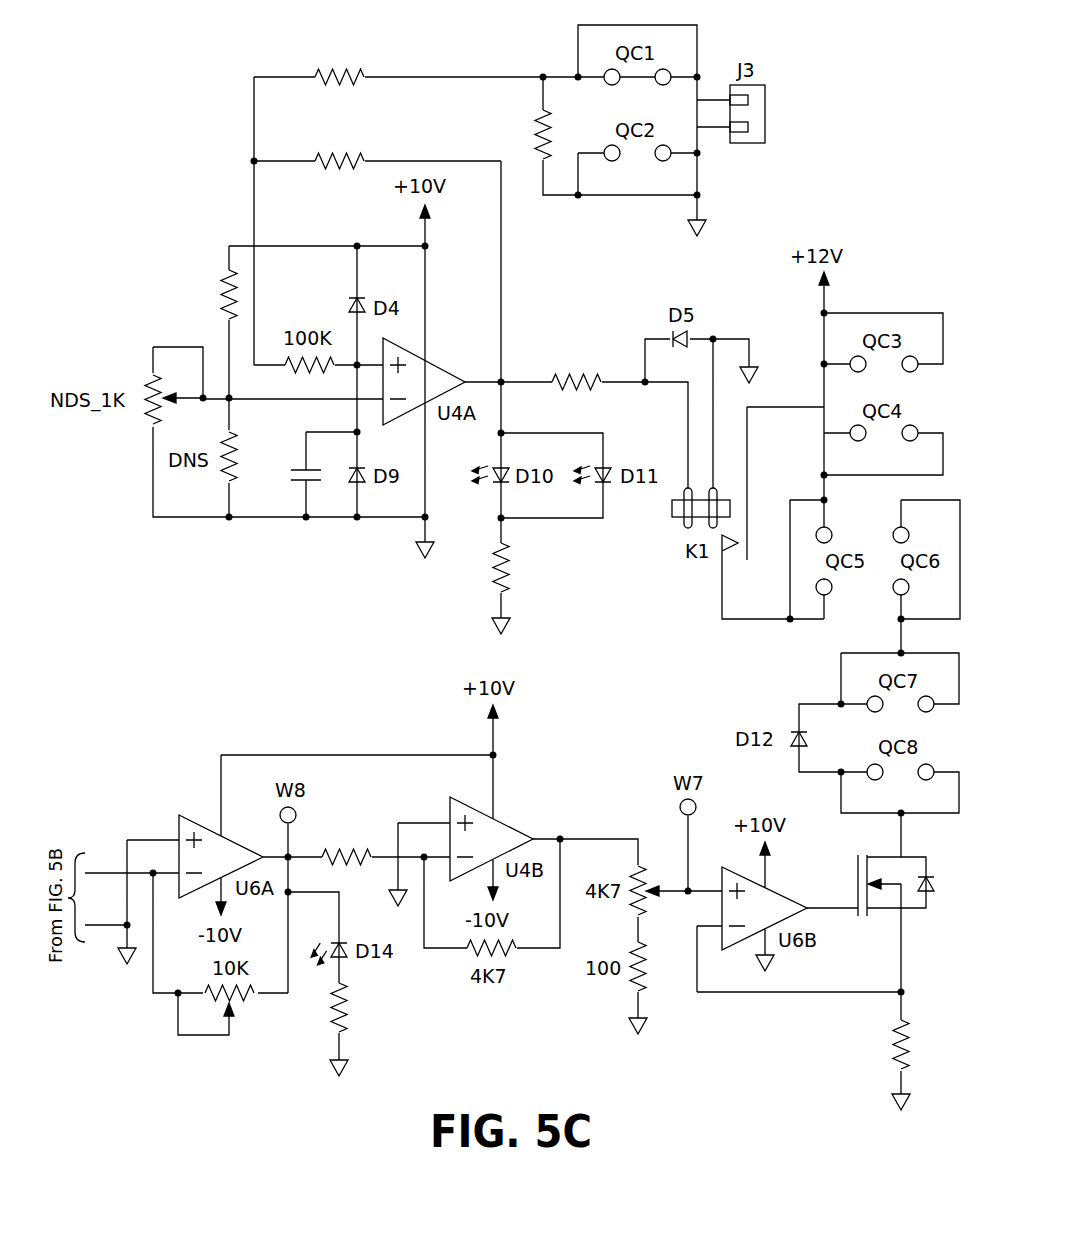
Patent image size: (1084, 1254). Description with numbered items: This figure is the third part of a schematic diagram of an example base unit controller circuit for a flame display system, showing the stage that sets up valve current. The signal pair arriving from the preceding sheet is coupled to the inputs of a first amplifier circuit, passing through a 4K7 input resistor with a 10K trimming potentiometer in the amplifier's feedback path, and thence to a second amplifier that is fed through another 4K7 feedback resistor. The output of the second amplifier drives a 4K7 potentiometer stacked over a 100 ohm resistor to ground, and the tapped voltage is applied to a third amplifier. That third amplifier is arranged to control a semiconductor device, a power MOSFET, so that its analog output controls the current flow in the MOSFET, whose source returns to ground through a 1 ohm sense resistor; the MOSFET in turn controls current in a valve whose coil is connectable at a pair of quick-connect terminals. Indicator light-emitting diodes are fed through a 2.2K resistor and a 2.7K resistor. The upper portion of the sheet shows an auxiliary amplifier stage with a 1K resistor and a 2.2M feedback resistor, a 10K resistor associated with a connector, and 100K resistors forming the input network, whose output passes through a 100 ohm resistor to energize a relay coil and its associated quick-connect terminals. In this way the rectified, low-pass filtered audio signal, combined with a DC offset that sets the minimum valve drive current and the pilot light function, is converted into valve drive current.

The 1 ohm resistor 1 is at (911, 1057).
The 100 ohm resistor 100 is at (555, 367).
The 1K resistor 1K is at (398, 62).
The 10K resistor 10K is at (520, 134).
The 100K resistor 100K is at (200, 381).
The 2.2M resistor 2.2M is at (377, 147).
The 2.2K resistor 2.2K is at (525, 567).
The 4K7 resistor 4K7 is at (329, 843).
The 2.7K resistor 2.7K is at (364, 1007).